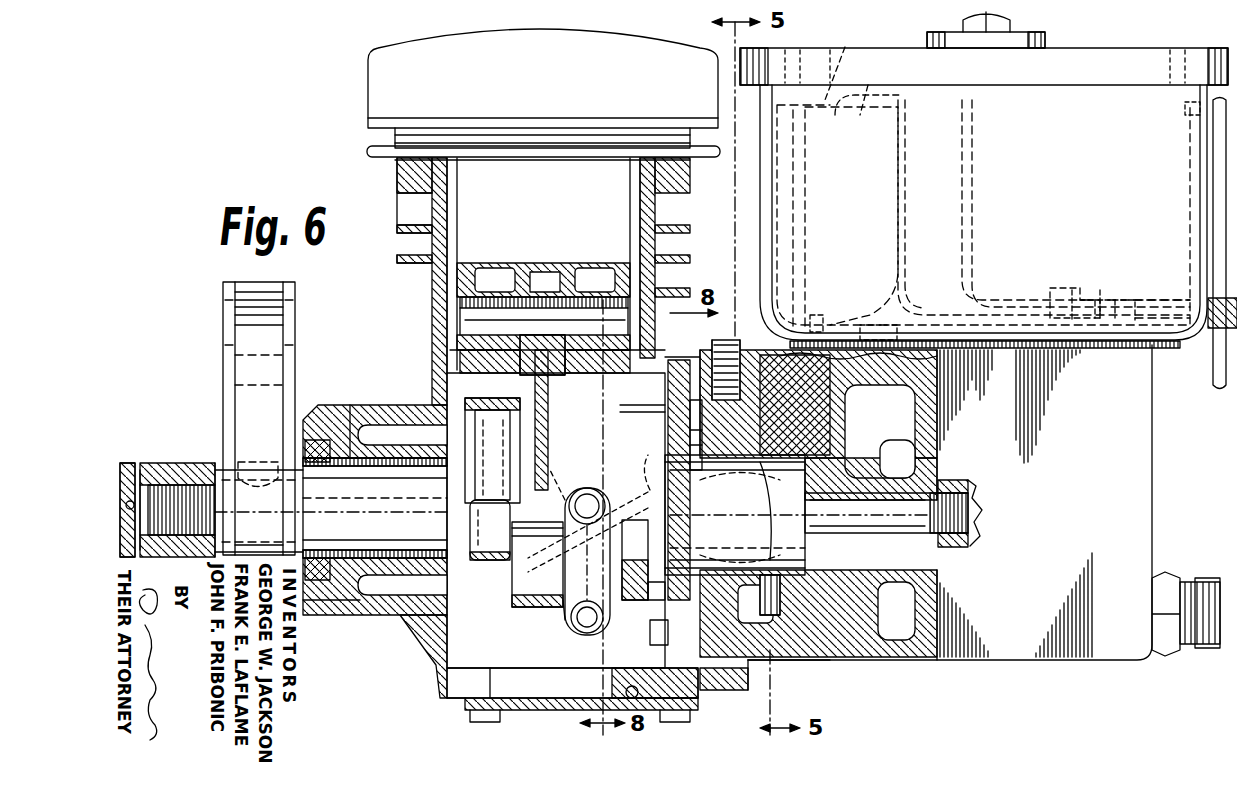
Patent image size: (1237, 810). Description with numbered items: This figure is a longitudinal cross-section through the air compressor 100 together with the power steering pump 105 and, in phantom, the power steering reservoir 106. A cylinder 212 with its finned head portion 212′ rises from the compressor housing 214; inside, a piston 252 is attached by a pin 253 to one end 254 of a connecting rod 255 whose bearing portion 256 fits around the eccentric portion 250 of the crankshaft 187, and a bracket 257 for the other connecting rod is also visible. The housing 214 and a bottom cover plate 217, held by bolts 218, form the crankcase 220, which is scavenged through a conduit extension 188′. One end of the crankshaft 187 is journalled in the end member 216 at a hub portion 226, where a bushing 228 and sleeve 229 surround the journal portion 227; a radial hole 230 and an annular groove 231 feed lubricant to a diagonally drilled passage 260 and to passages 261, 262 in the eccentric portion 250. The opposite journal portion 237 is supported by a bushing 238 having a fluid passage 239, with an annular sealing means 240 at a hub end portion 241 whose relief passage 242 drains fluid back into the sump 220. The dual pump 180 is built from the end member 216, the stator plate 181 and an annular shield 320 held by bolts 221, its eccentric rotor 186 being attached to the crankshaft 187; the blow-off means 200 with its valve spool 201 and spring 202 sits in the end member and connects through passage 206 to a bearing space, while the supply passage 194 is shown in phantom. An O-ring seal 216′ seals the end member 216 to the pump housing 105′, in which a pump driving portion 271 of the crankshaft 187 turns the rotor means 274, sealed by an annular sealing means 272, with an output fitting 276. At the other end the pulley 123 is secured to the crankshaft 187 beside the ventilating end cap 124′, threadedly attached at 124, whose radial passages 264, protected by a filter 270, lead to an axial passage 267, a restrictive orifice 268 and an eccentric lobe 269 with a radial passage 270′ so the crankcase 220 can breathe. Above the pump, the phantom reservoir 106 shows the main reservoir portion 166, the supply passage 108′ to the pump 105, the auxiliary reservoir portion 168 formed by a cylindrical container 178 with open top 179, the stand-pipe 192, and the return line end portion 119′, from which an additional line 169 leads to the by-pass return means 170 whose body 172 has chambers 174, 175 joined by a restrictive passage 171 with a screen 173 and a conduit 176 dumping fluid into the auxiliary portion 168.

The air compressor 100 is at (435, 300).
The power steering pump 105 is at (1005, 650).
The power steering pump housing 105′ is at (865, 655).
The power steering reservoir 106 is at (1132, 60).
The supply passage 108′ is at (868, 375).
The end portion of return line 119′ is at (1213, 140).
The pulley 123 is at (223, 298).
The nut 124 is at (180, 540).
The ventilating end cap 124′ is at (180, 465).
The main reservoir portion 166 is at (975, 355).
The auxiliary reservoir portion 168 is at (892, 75).
The additional line 169 is at (1165, 308).
The by-pass return means 170 is at (1065, 288).
The restrictive passage 171 is at (1100, 290).
The body 172 is at (1118, 300).
The screen 173 is at (1074, 290).
The chamber 174 is at (1125, 300).
The chamber 175 is at (1058, 305).
The conduit 176 is at (915, 98).
The cylindrical container 178 is at (903, 215).
The open top 179 is at (844, 58).
The dual pump 180 is at (660, 428).
The stator plate 181 is at (668, 380).
The eccentric pump rotor 186 is at (670, 590).
The compressor crankshaft 187 is at (878, 612).
The conduit extension 188′ is at (638, 691).
The stand-pipe 192 is at (805, 218).
The supply passage 194 is at (792, 370).
The blow-off means 200 is at (732, 350).
The valve spool 201 is at (750, 462).
The spring 202 is at (745, 345).
The passage 206 is at (735, 515).
The cylinder 212 is at (405, 178).
The finned head portion 212′ is at (380, 55).
The compressor housing 214 is at (440, 405).
The crankshaft journalling end member 216 is at (758, 700).
The O-ring seal 216′ is at (775, 663).
The bottom cover plate 217 is at (465, 698).
The bolts 218 is at (586, 728).
The crankcase 220 is at (440, 680).
The bolts 221 is at (650, 627).
The hub portion 226 is at (755, 605).
The journal portion 227 is at (840, 460).
The bushing 228 is at (716, 560).
The sleeve 229 is at (735, 585).
The radial hole 230 is at (800, 445).
The annular groove 231 is at (774, 511).
The journal portion 237 is at (402, 585).
The bushing 238 is at (360, 396).
The fluid passage 239 is at (405, 556).
The annular sealing means 240 is at (318, 440).
The hub end portion 241 is at (323, 605).
The relief passage 242 is at (352, 600).
The eccentric portion 250 is at (518, 595).
The piston 252 is at (520, 262).
The pin 253 is at (590, 296).
The connecting rod end 254 is at (550, 345).
The connecting rod 255 is at (600, 398).
The bearing portion 256 is at (545, 610).
The bracket 257 is at (572, 632).
The diagonally drilled passage 260 is at (591, 513).
The passage 261 is at (568, 475).
The passage 262 is at (587, 561).
The radial passages 264 is at (126, 505).
The axial passage 267 is at (270, 510).
The restrictive orifice 268 is at (445, 500).
The eccentric lobe 269 is at (478, 410).
The filter 270 is at (160, 460).
The radial passage 270′ is at (505, 565).
The pump driving portion 271 is at (980, 512).
The annular sealing means 272 is at (850, 580).
The rotor means 274 is at (965, 547).
The fitting 276 is at (1168, 585).
The annular shield 320 is at (620, 412).